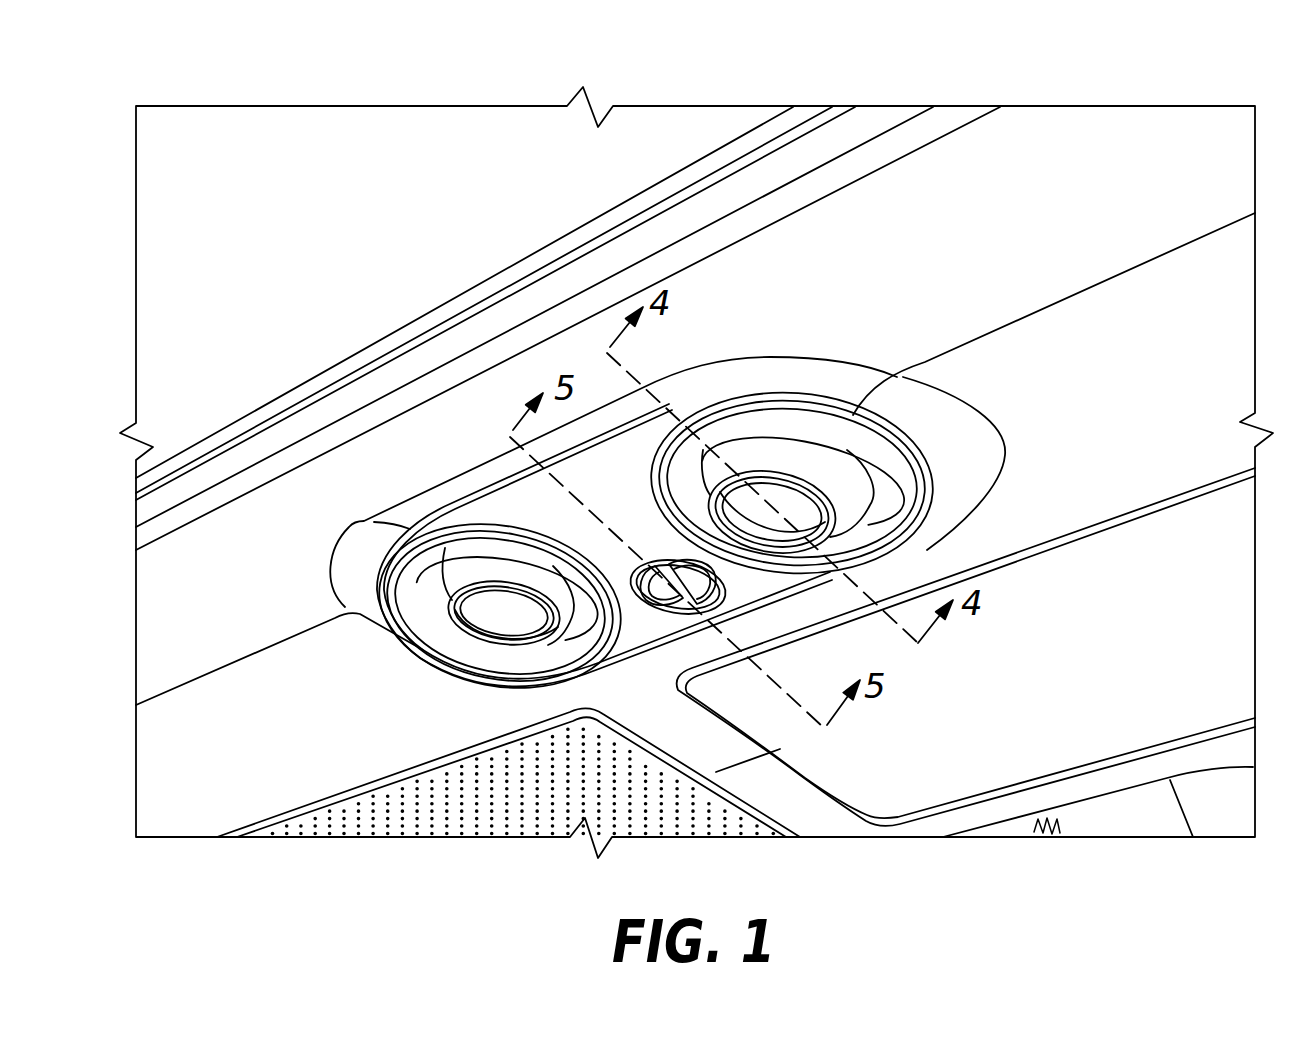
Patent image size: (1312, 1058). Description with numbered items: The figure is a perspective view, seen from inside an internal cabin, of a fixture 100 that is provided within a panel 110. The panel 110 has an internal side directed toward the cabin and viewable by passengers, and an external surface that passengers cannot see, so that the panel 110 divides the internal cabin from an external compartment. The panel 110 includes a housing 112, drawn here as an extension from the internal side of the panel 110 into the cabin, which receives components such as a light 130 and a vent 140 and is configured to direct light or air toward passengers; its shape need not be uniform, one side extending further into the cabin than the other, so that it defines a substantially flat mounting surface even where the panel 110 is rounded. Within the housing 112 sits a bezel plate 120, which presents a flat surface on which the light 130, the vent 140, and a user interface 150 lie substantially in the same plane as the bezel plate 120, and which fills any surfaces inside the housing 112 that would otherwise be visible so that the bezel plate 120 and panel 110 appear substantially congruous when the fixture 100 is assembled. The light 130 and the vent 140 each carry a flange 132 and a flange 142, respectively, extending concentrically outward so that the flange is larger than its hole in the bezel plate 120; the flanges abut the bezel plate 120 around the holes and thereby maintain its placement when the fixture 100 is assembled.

The fixture 100 is at (73, 98).
The panel 110 is at (1130, 340).
The housing 112 is at (820, 370).
The bezel plate 120 is at (625, 467).
The light 130 is at (786, 505).
The flange 132 is at (883, 525).
The vent 140 is at (512, 620).
The flange 142 is at (417, 597).
The user interface 150 is at (693, 588).